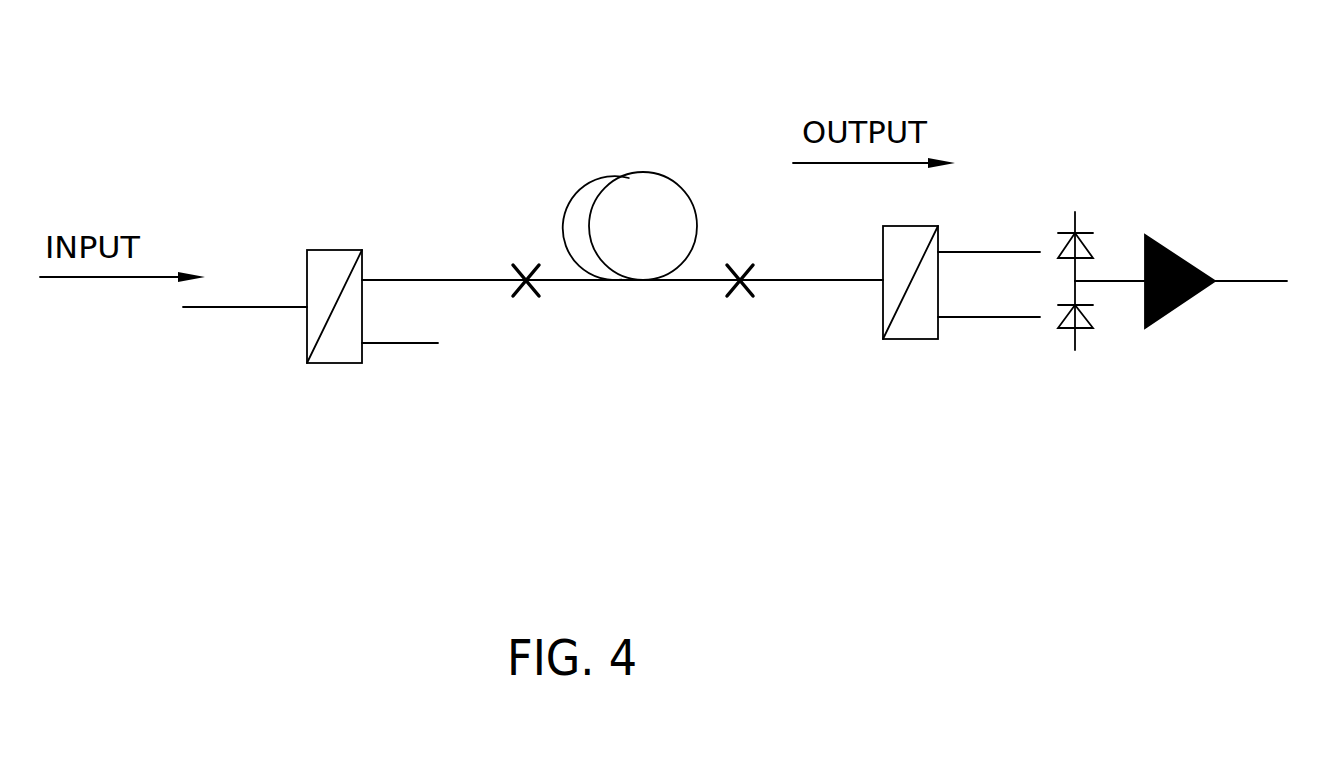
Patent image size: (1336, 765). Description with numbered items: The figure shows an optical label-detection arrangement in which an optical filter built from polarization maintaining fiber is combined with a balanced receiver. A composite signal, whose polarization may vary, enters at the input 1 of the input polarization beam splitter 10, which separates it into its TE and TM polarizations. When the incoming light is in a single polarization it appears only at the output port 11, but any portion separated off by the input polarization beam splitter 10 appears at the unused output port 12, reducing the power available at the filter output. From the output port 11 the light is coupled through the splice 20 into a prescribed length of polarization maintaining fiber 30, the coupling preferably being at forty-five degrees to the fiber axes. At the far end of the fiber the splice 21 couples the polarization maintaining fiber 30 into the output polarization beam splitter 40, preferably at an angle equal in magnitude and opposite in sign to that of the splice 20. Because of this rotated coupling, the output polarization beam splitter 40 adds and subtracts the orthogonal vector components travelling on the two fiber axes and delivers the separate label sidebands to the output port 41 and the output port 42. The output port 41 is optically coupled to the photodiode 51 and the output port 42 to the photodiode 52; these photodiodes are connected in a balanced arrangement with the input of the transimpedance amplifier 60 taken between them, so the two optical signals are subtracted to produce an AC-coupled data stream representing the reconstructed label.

The input 1 is at (183, 307).
The input polarization beam splitter 10 is at (338, 250).
The output port 11 is at (428, 280).
The unused output port 12 is at (397, 343).
The splice 20 is at (523, 265).
The splice 21 is at (737, 265).
The polarization maintaining fiber 30 is at (665, 175).
The output polarization beam splitter 40 is at (913, 339).
The output port 41 is at (962, 252).
The output port 42 is at (962, 317).
The photodiode 51 is at (1093, 247).
The photodiode 52 is at (1093, 315).
The transimpedance amplifier 60 is at (1183, 255).